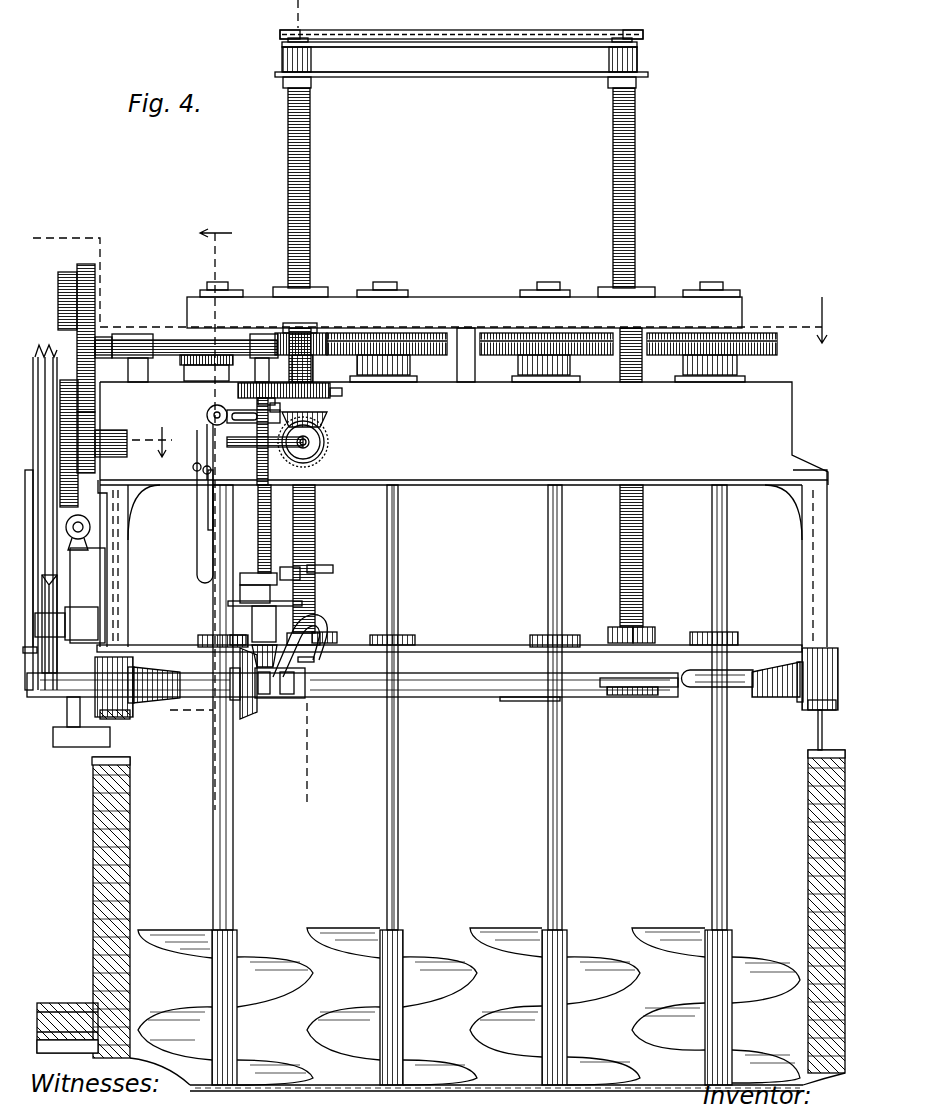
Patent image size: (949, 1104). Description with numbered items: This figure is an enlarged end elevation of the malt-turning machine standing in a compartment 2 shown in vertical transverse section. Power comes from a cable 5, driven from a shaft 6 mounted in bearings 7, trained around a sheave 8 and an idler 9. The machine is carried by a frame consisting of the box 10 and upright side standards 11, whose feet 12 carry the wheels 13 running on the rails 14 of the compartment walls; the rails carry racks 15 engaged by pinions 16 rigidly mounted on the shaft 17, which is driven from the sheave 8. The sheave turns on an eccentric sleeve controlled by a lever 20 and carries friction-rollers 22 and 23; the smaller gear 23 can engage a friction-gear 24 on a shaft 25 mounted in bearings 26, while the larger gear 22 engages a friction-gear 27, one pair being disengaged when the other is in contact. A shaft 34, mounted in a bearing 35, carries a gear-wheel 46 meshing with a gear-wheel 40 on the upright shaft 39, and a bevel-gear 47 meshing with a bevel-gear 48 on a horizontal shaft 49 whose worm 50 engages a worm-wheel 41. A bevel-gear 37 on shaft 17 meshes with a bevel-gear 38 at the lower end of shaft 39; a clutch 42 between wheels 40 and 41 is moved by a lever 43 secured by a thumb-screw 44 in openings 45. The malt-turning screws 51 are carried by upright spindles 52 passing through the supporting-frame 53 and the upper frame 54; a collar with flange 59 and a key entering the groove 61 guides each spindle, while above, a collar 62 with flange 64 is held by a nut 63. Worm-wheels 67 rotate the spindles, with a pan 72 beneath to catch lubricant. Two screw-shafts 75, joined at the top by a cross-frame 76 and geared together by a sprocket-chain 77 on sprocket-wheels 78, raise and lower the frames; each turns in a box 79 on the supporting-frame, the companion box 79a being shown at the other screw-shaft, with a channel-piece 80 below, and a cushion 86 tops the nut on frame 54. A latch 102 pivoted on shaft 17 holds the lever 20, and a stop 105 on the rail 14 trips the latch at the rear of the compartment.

The tank or receptacle 2 is at (441, 957).
The cable 5 is at (430, 285).
The shaft 6 is at (304, 758).
The bearings 7 is at (200, 510).
The sheave 8 is at (44, 346).
The idler 9 is at (55, 661).
The box 10 is at (128, 453).
The upright side standards 11 is at (125, 604).
The feet 12 is at (135, 700).
The wheels 13 is at (130, 705).
The rails 14 is at (123, 723).
The racks 15 is at (115, 680).
The pinions 16 is at (110, 690).
The shaft 17 is at (460, 698).
The lever 20 is at (30, 573).
The friction-roller 22 is at (68, 380).
The friction-roller 23 is at (92, 432).
The friction-gear 24 is at (97, 270).
The shaft 25 is at (189, 350).
The bearings 26 is at (129, 338).
The friction-gear 27 is at (68, 272).
The shaft 34 is at (282, 406).
The bearing 35 is at (313, 372).
The bevel-gear 37 is at (254, 703).
The bevel-gear 38 is at (310, 630).
The upright shaft 39 is at (263, 558).
The gear-wheel 40 is at (238, 391).
The worm-wheel 41 is at (271, 484).
The clutch 42 is at (342, 394).
The lever 43 is at (203, 430).
The thumb-screw 44 is at (198, 473).
The openings 45 is at (218, 482).
The gear-wheel 46 is at (287, 345).
The bevel-gear 47 is at (327, 420).
The bevel-gear 48 is at (328, 446).
The horizontal shaft 49 is at (318, 456).
The worm 50 is at (306, 441).
The malt-turning screws 51 is at (430, 957).
The upright spindles 52 is at (213, 863).
The supporting-frame 53 is at (460, 645).
The frame 54 is at (455, 302).
The flange 59 is at (396, 635).
The groove 61 is at (387, 881).
The collar 62 is at (528, 700).
The nut 63 is at (384, 282).
The flange 64 is at (521, 290).
The worm-wheel 67 is at (388, 337).
The pan 72 is at (440, 357).
The screw-shafts 75 is at (312, 187).
The cross-frame 76 is at (461, 59).
The sprocket-chain 77 is at (488, 30).
The sprocket-wheels 78 is at (280, 34).
The box 79 is at (612, 632).
The base 79a is at (654, 621).
The channel-piece 80 is at (614, 696).
The cushion 86 is at (640, 290).
The latch 102 is at (31, 694).
The stop 105 is at (60, 742).